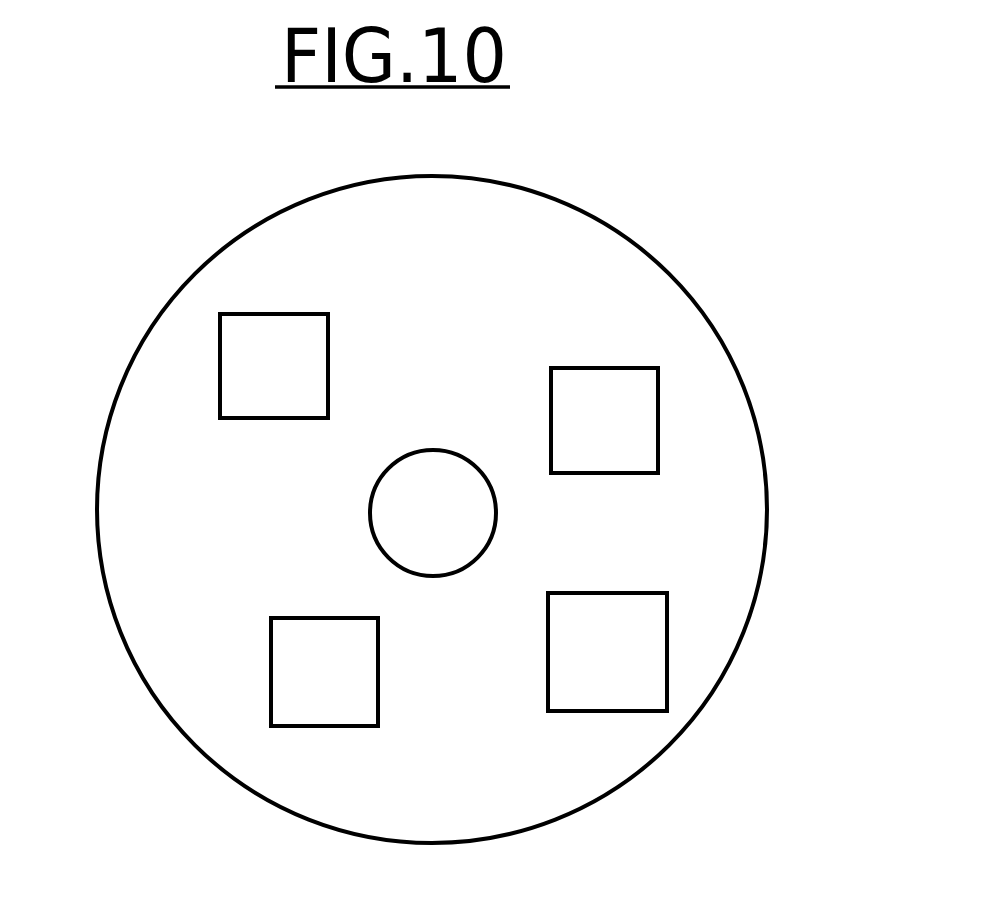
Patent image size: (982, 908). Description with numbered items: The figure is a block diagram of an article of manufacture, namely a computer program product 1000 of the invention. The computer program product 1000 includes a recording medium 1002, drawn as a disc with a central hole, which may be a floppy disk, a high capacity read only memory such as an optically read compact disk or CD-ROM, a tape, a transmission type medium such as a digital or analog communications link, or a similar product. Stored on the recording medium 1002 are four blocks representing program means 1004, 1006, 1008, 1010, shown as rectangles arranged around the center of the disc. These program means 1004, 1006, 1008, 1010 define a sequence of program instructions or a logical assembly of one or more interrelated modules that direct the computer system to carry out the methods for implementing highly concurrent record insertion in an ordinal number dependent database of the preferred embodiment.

The computer program product 1000 is at (868, 241).
The recording medium 1002 is at (167, 332).
The program means 1004 is at (324, 672).
The program means 1006 is at (607, 652).
The program means 1008 is at (604, 420).
The program means 1010 is at (274, 366).